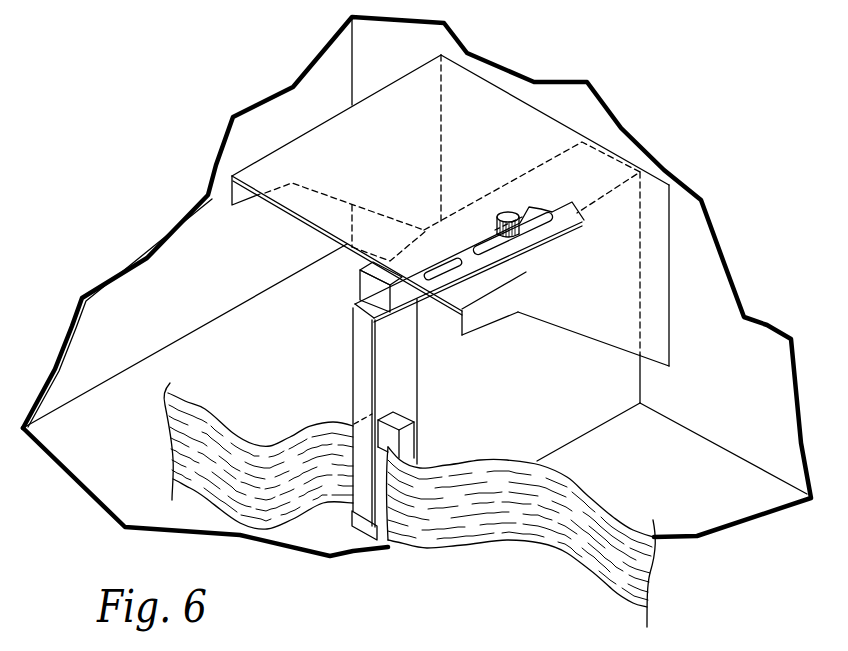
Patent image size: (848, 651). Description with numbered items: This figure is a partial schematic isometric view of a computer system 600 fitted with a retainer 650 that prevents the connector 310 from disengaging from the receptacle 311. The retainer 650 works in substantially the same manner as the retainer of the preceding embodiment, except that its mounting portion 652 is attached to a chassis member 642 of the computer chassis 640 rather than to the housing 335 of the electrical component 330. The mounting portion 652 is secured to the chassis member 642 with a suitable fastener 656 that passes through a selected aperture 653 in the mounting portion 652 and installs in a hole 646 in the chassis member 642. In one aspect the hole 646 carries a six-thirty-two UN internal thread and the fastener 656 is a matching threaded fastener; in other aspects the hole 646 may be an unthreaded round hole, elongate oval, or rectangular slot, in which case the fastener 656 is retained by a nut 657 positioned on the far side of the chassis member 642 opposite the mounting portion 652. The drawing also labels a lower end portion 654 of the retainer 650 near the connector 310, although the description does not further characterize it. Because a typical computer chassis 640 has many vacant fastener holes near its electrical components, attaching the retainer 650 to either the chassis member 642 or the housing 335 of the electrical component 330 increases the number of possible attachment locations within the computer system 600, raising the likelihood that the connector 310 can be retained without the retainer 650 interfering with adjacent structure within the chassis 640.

The computer system 600 is at (752, 536).
The computer chassis 640 is at (706, 257).
The chassis member 642 is at (503, 103).
The hole 646 is at (484, 227).
The retainer 650 is at (372, 387).
The mounting portion 652 is at (545, 212).
The aperture 653 is at (482, 246).
The rail foot 654 is at (353, 512).
The fastener 656 is at (507, 214).
The nut 657 is at (512, 236).
The connector 310 is at (391, 534).
The receptacle 311 is at (394, 413).
The electrical component 330 is at (582, 408).
The housing 335 is at (624, 378).